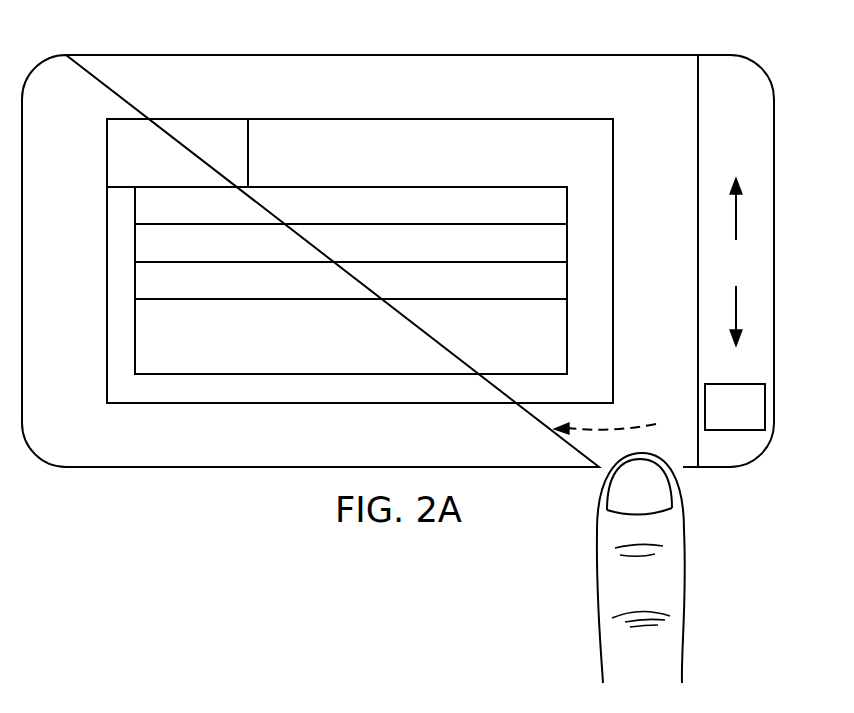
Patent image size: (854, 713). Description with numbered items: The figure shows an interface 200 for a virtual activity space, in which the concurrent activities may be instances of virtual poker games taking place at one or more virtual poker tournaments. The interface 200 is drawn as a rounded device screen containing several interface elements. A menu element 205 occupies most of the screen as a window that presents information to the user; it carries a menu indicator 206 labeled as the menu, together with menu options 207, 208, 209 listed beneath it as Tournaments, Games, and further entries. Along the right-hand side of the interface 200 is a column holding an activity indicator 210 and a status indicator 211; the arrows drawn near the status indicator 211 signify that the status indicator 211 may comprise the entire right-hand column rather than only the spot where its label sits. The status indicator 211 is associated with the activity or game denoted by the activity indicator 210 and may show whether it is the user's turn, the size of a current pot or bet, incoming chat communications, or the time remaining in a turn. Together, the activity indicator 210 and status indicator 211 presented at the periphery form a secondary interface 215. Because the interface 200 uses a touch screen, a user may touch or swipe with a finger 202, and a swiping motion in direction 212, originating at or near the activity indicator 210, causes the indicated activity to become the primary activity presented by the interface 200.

The interface 200 is at (110, 54).
The finger 202 is at (684, 585).
The menu element 205 is at (363, 118).
The menu indicator 206 is at (123, 163).
The menu option 207 is at (135, 210).
The menu option 208 is at (135, 247).
The menu option 209 is at (135, 284).
The activity indicator 210 is at (735, 407).
The status indicator 211 is at (737, 262).
The direction 212 is at (680, 420).
The secondary interface 215 is at (775, 41).